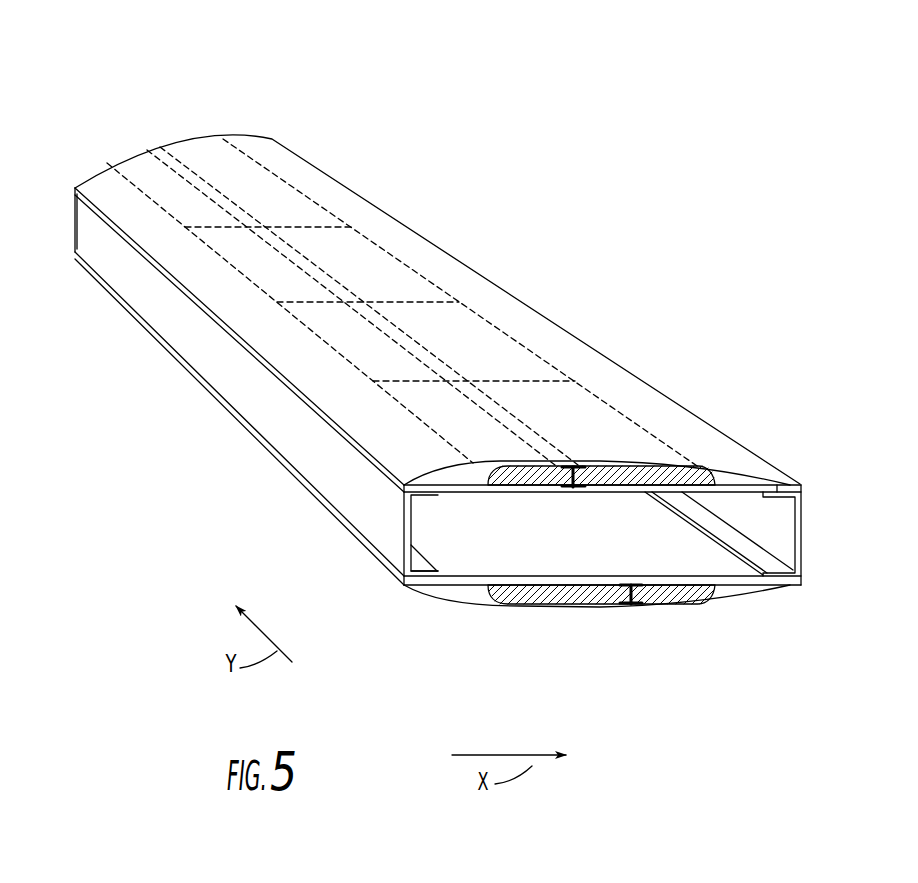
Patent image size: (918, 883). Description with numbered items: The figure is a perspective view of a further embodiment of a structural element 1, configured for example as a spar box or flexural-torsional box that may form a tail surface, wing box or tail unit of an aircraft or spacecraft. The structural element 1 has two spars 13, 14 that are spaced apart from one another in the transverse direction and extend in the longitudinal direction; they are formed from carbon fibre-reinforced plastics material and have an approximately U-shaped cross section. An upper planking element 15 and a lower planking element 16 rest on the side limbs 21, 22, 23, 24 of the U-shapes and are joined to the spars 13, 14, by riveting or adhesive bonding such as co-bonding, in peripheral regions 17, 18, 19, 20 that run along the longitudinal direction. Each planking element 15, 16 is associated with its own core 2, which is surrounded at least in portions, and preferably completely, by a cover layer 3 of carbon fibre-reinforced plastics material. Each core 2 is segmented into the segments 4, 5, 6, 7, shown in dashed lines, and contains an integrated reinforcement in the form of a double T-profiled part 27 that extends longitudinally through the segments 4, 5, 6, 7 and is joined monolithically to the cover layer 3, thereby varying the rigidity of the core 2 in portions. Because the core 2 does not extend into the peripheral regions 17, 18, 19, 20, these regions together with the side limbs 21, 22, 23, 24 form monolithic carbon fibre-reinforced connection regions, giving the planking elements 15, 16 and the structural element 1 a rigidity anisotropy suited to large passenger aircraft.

The structural element 1 is at (334, 53).
The core 2 is at (657, 460).
The cover layer 3 is at (562, 330).
The core segment 4 is at (592, 418).
The core segment 5 is at (470, 330).
The core segment 6 is at (363, 270).
The core segment 7 is at (258, 190).
The spar 13 is at (763, 517).
The spar 14 is at (227, 358).
The upper planking element 15 is at (339, 396).
The lower planking element 16 is at (471, 602).
The peripheral region 17 is at (448, 486).
The peripheral region 18 is at (790, 483).
The peripheral region 19 is at (432, 584).
The peripheral region 20 is at (783, 577).
The side limb 21 is at (777, 490).
The side limb 22 is at (781, 578).
The side limb 23 is at (410, 495).
The side limb 24 is at (389, 582).
The double T-profiled part 27 is at (577, 489).